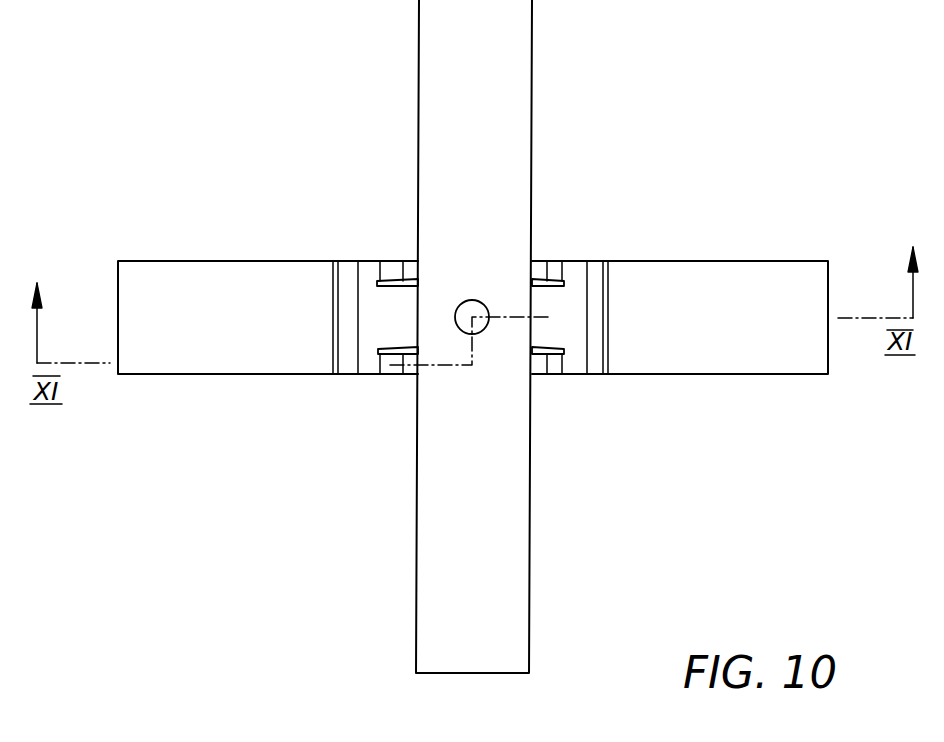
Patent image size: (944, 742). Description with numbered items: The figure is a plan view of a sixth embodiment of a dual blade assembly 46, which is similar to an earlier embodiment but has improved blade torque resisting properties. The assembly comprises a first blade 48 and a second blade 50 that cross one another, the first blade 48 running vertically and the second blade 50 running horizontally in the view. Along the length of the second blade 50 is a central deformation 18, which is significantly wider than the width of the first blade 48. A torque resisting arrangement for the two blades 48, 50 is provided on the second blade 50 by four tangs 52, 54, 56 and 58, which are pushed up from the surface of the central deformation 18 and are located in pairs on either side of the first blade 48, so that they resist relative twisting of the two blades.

The dual blade assembly 46 is at (473, 336).
The first blade 48 is at (515, 53).
The second blade 50 is at (202, 288).
The central deformation 18 is at (577, 317).
The tang 52 is at (405, 278).
The tang 54 is at (406, 368).
The tang 56 is at (542, 270).
The tang 58 is at (543, 367).